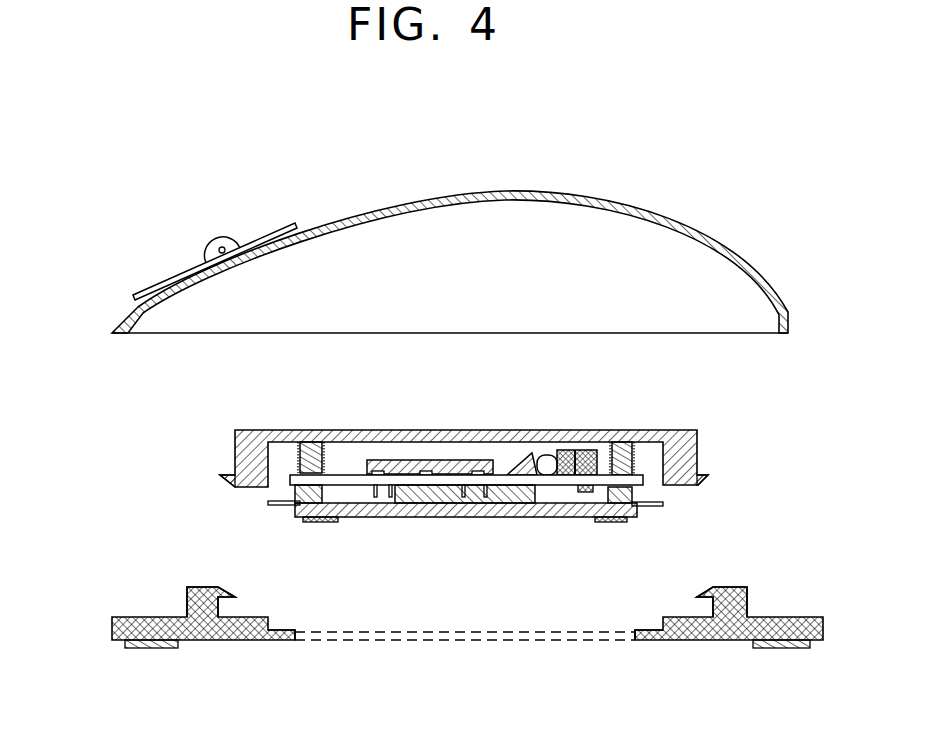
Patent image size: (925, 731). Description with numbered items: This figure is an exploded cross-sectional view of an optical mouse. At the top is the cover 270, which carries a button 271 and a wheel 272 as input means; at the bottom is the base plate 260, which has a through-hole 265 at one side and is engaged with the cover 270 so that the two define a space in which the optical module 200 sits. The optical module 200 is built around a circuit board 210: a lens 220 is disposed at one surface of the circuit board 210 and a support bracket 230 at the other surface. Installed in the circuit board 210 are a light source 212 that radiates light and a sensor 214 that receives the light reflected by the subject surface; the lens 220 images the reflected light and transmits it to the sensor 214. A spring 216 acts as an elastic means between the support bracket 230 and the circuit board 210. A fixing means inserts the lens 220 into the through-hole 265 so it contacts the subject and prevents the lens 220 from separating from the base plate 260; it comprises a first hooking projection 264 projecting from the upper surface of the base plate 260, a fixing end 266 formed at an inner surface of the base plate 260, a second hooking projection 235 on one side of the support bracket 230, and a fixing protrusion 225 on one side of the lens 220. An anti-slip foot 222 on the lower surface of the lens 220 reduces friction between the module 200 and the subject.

The optical module 200 is at (740, 446).
The circuit board 210 is at (645, 482).
The light source 212 is at (547, 458).
The sensor 214 is at (430, 458).
The spring 216 is at (300, 447).
The lens 220 is at (360, 517).
The anti-slip foot 222 is at (627, 521).
The fixing protrusion 225 is at (268, 503).
The support bracket 230 is at (643, 431).
The second hooking projection 235 is at (710, 478).
The base plate 260 is at (112, 625).
The first hooking projection 264 is at (187, 597).
The through-hole 265 is at (592, 636).
The fixing end 266 is at (293, 632).
The cover 270 is at (717, 228).
The button 271 is at (278, 228).
The wheel 272 is at (211, 246).